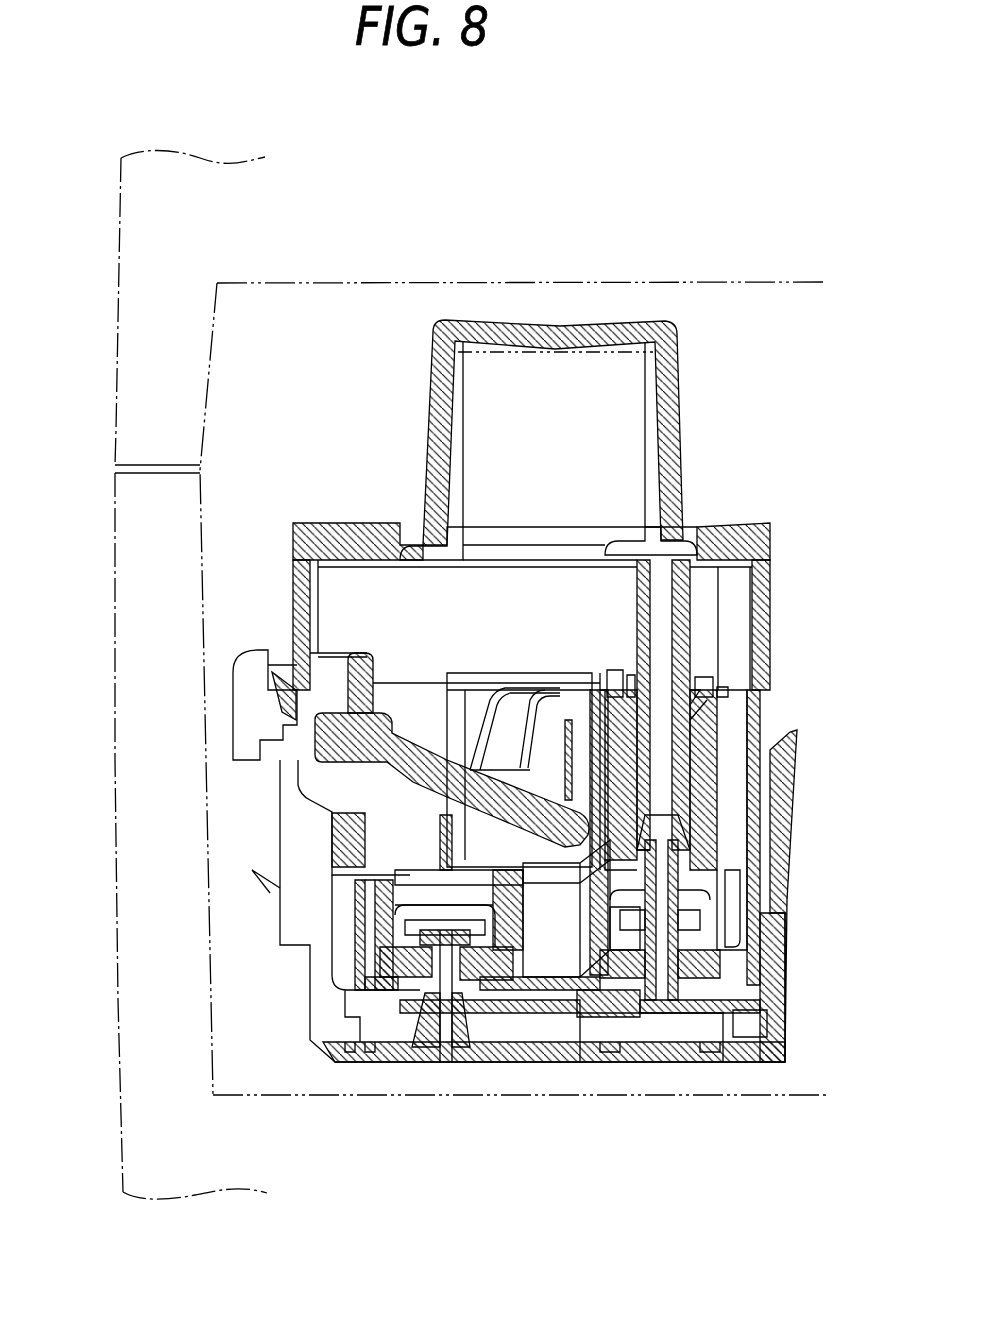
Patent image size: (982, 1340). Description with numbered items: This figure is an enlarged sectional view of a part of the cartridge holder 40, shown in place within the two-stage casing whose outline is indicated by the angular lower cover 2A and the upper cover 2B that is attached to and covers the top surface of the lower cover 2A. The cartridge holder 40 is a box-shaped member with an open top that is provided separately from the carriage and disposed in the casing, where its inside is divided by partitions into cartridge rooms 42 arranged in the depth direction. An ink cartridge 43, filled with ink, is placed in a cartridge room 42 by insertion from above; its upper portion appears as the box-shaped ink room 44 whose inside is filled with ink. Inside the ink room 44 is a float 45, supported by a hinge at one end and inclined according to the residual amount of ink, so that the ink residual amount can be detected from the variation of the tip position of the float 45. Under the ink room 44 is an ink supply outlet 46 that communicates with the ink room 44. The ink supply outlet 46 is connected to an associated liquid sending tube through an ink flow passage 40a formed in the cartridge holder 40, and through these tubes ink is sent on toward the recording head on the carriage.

The lower cover 2A is at (152, 545).
The upper cover 2B is at (152, 378).
The cartridge holder 40 is at (310, 832).
The ink flow passage 40a is at (440, 1065).
The cartridge room 42 is at (768, 810).
The ink cartridge 43 is at (610, 322).
The ink room 44 is at (300, 597).
The float 45 is at (330, 740).
The ink supply outlet 46 is at (483, 1010).